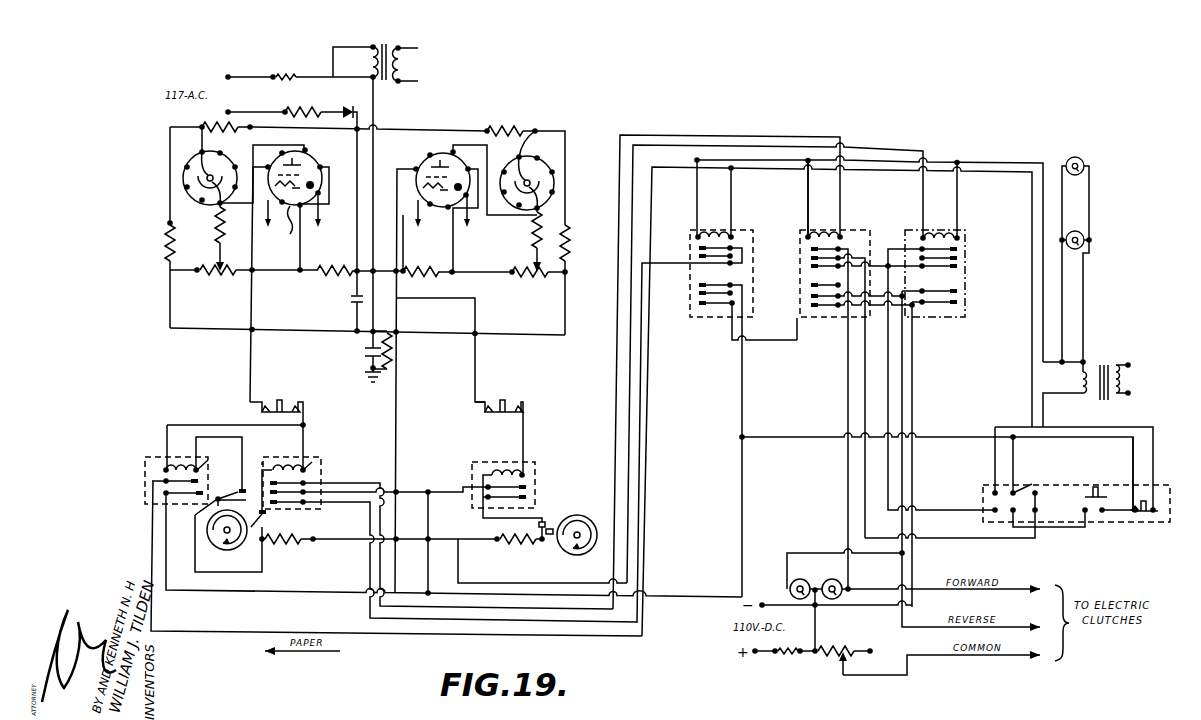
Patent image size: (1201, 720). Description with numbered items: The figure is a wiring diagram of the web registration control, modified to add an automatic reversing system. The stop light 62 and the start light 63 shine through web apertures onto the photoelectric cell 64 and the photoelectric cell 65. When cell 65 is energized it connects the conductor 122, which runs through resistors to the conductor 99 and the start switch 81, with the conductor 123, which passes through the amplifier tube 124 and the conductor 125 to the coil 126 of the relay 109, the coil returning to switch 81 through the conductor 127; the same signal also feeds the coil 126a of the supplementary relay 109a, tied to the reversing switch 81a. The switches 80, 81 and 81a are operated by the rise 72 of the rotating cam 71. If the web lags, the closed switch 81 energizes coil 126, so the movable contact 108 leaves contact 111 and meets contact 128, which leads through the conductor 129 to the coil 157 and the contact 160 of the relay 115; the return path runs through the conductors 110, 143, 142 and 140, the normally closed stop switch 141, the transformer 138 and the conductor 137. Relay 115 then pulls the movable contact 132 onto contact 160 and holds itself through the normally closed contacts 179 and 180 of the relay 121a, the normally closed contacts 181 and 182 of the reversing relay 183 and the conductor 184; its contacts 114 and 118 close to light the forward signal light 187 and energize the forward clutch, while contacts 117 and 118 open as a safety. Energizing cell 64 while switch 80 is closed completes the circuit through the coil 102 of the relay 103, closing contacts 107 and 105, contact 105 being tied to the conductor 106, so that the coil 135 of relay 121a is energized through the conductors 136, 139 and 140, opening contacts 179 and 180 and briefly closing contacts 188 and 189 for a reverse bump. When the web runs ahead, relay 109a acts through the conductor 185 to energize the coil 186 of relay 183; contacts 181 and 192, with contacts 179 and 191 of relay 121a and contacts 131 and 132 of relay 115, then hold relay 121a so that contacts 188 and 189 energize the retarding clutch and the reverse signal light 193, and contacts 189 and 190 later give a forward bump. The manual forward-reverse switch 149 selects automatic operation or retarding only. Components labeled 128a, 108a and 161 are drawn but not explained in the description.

The conductor 122 is at (170, 149).
The photoelectric cell 65 is at (222, 159).
The conductor 123 is at (303, 154).
The photoelectric cell 64 is at (537, 165).
The amplifier tube 124 is at (293, 223).
The conductor 125 is at (266, 310).
The conductor 99 is at (402, 412).
The coil 126a is at (164, 427).
The supplementary relay 109a is at (140, 507).
The relay contact 128a is at (204, 470).
The reversing switch 81a is at (220, 501).
The relay contacts 108a is at (178, 498).
The rise 72 is at (582, 505).
The start switch 81 is at (266, 540).
The conductor 127 is at (262, 462).
The coil 126 is at (303, 463).
The contact 128 is at (319, 462).
The relay 109 is at (325, 518).
The contact 111 is at (264, 512).
The movable contact 108 is at (300, 508).
The conductor 110 is at (408, 492).
The conductor 143 is at (437, 514).
The movable contact 107 is at (483, 477).
The coil 102 is at (520, 469).
The relay 103 is at (539, 522).
The contact 105 is at (508, 533).
The stop switch 80 is at (547, 546).
The rotating disk 71 is at (584, 543).
The conductor 106 is at (480, 583).
The conductor 129 is at (424, 593).
The conductor 185 is at (354, 633).
The conductor 142 is at (514, 596).
The conductor 136 is at (806, 192).
The coil 186 is at (713, 233).
The reversing relay 183 is at (692, 237).
The contact 192 is at (713, 266).
The contact 181 is at (732, 293).
The contact 182 is at (718, 307).
The relay 115 is at (800, 247).
The coil 157 is at (827, 232).
The contact 160 is at (789, 238).
The movable contact 132 is at (850, 250).
The contact 131 is at (835, 396).
The contact 114 is at (840, 278).
The movable contact 118 is at (856, 305).
The contact 117 is at (816, 324).
The relay 121a is at (988, 240).
The coil 135 is at (939, 234).
The contact 191 is at (958, 248).
The contact 179 is at (954, 261).
The contact 180 is at (954, 278).
The contact 188 is at (929, 291).
The contact 189 is at (951, 302).
The contact 190 is at (936, 318).
The conductor 137 is at (1040, 194).
The stop light 62 is at (1082, 161).
The start light 63 is at (1082, 235).
The transformer 138 is at (1082, 389).
The conductor 139 is at (1045, 424).
The conductor 184 is at (748, 404).
The conductor 140 is at (938, 441).
The contact 161 is at (1092, 492).
The forward-reverse switch 149 is at (1036, 497).
The stop switch 141 is at (1134, 515).
The reverse signal light 193 is at (790, 580).
The forward signal light 187 is at (836, 580).